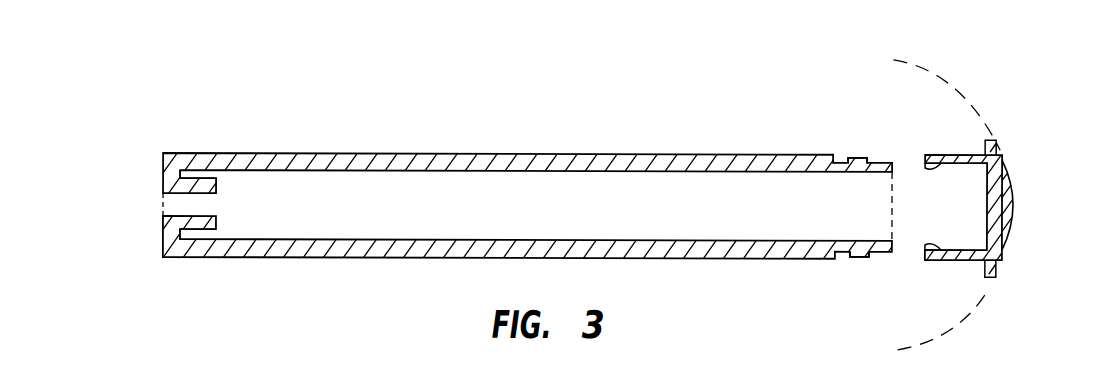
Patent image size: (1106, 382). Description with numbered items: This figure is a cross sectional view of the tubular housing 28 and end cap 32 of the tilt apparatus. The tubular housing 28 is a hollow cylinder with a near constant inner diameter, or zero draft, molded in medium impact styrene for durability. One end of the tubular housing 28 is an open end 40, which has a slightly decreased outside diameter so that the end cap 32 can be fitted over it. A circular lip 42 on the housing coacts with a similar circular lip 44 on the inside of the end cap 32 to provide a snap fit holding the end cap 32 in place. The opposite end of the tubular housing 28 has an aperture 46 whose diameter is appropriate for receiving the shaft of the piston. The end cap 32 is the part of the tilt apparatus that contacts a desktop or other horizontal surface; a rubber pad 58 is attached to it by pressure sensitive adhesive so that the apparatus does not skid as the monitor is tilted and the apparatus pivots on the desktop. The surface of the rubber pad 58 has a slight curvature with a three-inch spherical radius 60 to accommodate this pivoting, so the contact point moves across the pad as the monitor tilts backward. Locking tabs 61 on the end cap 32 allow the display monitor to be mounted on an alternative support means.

The tubular housing 28 is at (483, 142).
The end cap 32 is at (948, 146).
The open end 40 is at (906, 223).
The circular lip 42 is at (858, 151).
The circular lip 44 is at (933, 169).
The aperture 46 is at (158, 205).
The rubber pad 58 is at (1014, 206).
The spherical radius 60 is at (962, 90).
The locking tabs 61 is at (991, 146).